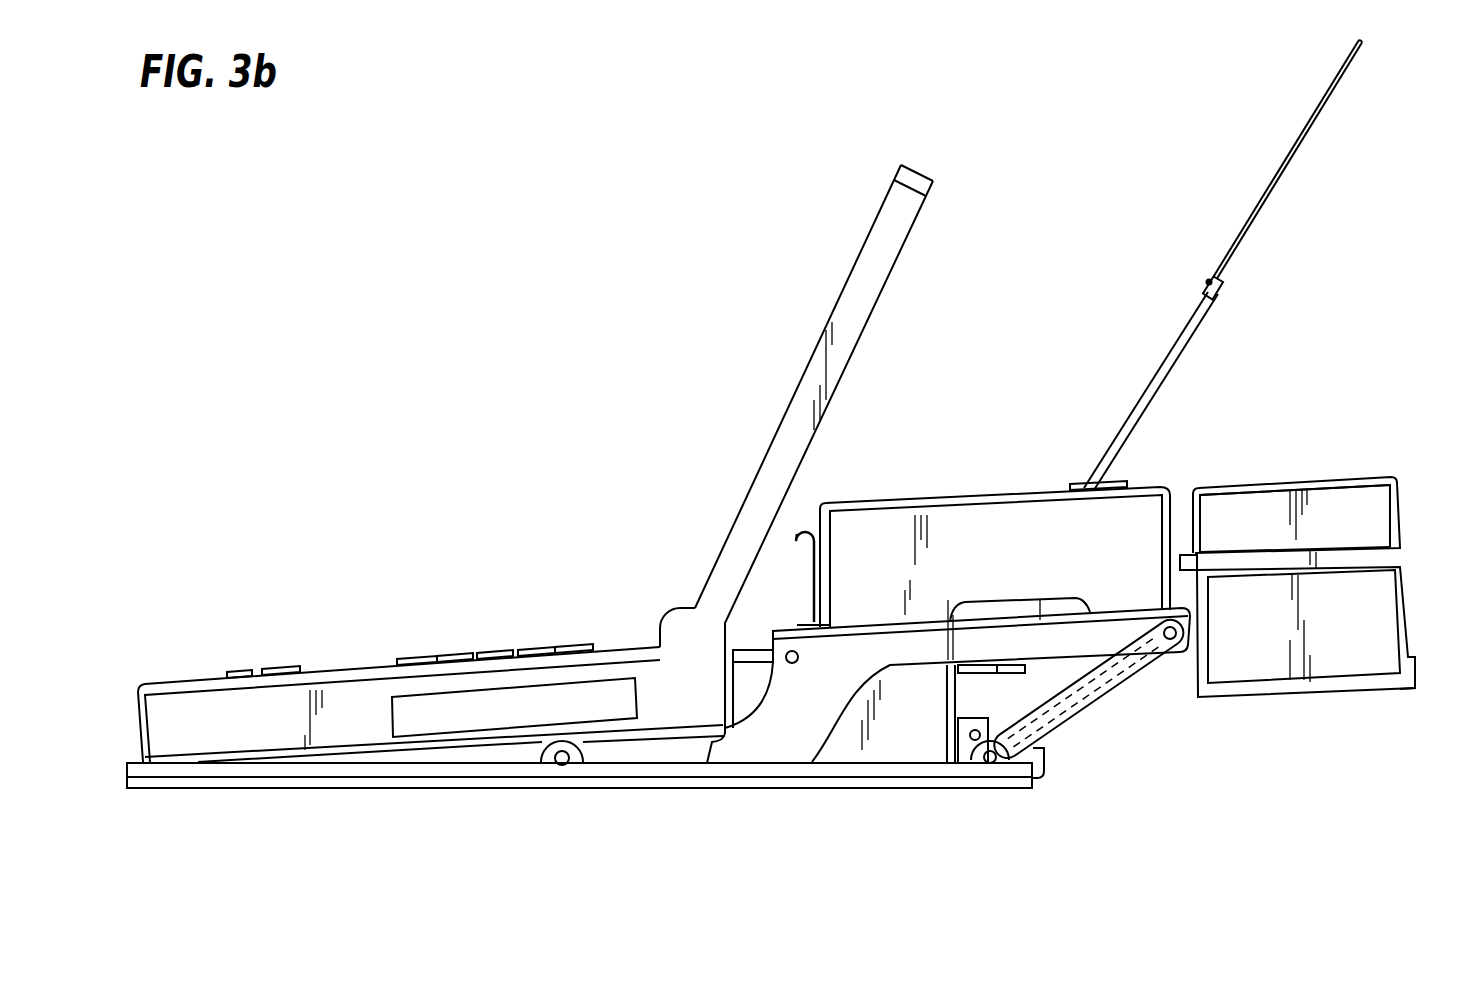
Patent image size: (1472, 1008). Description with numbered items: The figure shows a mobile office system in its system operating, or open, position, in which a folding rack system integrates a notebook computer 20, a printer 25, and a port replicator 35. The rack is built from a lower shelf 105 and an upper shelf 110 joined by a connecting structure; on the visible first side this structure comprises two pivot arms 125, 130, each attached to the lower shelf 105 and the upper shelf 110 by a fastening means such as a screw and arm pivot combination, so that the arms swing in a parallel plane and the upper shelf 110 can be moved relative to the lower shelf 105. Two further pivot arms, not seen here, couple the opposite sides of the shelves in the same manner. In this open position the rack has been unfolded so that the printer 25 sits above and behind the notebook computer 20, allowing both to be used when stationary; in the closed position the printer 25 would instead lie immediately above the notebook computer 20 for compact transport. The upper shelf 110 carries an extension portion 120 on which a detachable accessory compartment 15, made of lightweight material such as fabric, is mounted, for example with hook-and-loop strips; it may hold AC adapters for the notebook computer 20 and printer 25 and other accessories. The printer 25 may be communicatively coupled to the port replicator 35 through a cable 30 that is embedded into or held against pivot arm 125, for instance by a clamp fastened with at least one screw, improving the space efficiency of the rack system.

The detachable accessory compartment 15 is at (1330, 473).
The notebook computer 20 is at (362, 690).
The printer 25 is at (1143, 508).
The cable 30 is at (1080, 718).
The port replicator 35 is at (925, 723).
The lower shelf 105 is at (227, 790).
The upper shelf 110 is at (783, 733).
The extension portion 120 is at (1443, 653).
The pivot arm 125 is at (1120, 687).
The pivot arm 130 is at (632, 752).